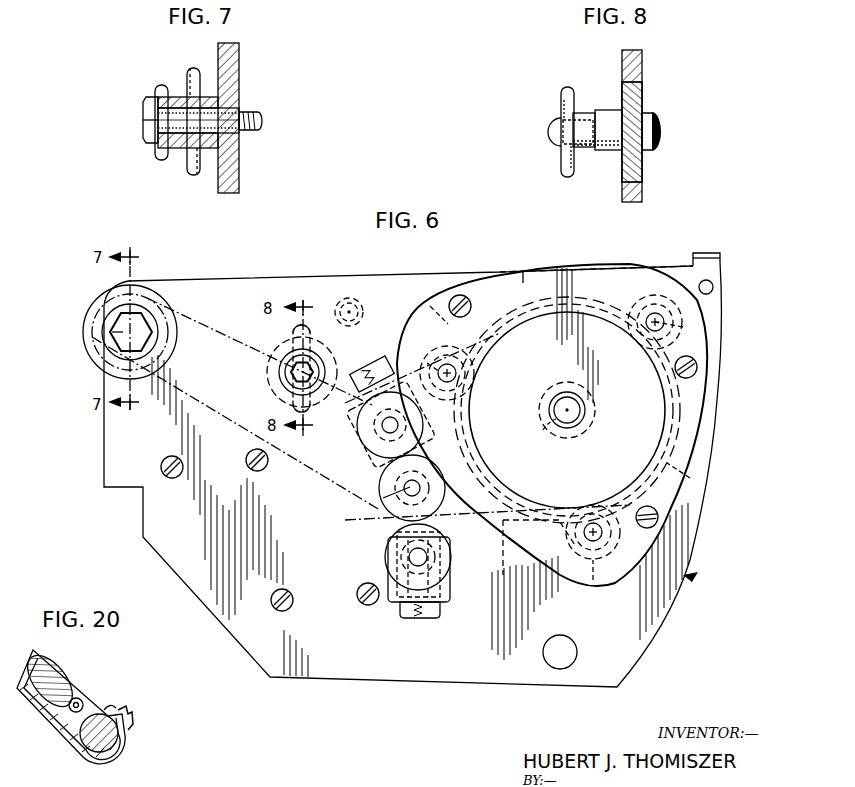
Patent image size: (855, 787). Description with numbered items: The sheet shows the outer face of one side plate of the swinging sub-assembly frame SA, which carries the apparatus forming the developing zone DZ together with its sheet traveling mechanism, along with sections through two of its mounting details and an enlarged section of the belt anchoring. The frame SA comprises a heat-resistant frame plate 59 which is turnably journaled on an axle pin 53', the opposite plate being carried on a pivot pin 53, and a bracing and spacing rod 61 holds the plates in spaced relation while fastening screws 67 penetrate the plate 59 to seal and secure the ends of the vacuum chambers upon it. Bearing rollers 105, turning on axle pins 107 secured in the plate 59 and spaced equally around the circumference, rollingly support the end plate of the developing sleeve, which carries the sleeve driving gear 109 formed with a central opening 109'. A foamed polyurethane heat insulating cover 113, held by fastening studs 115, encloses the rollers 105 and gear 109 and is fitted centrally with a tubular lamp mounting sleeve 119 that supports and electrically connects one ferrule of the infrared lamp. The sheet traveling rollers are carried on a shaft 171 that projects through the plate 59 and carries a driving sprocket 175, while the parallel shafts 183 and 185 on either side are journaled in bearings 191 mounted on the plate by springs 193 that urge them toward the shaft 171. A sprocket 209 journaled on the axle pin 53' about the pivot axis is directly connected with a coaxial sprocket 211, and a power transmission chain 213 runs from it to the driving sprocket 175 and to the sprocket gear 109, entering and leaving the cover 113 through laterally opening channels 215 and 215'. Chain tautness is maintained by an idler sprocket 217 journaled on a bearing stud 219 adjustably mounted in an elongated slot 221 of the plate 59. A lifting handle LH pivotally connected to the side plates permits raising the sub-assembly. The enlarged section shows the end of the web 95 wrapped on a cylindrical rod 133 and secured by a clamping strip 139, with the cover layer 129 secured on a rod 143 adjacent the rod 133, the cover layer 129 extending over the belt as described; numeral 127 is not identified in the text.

In FIG. 7, the pivot pin 53 is at (207, 113).
In FIG. 6, the axle pin 53' is at (83, 328).
In FIG. 7, the frame plate 59 is at (227, 155).
In FIG. 8, the frame plate 59 is at (635, 191).
In FIG. 6, the frame plate 59 is at (328, 287).
In FIG. 6, the bracing and spacing rod 61 is at (360, 306).
In FIG. 6, the fastening screws 67 is at (178, 478).
In FIG. 20, the web 95 is at (60, 724).
In FIG. 6, the bearing rollers 105 is at (427, 363).
In FIG. 6, the axle pins 107 is at (461, 375).
In FIG. 6, the sleeve driving gear 109 is at (552, 415).
In FIG. 6, the central opening 109' is at (533, 446).
In FIG. 6, the heat insulating cover 113 is at (523, 283).
In FIG. 6, the fastening studs 115 is at (463, 294).
In FIG. 6, the lamp mounting sleeve 119 is at (583, 409).
In FIG. 20, the lug 127 is at (53, 674).
In FIG. 20, the cover layer 129 is at (78, 697).
In FIG. 20, the cylindrical rod 133 is at (112, 748).
In FIG. 20, the clamping strip 139 is at (132, 732).
In FIG. 20, the rod 143 is at (92, 706).
In FIG. 6, the shaft 171 is at (384, 498).
In FIG. 6, the driving sprocket 175 is at (384, 483).
In FIG. 6, the shaft 183 is at (420, 557).
In FIG. 6, the shaft 185 is at (399, 428).
In FIG. 6, the bearings 191 is at (353, 403).
In FIG. 6, the springs 193 is at (382, 358).
In FIG. 7, the sprocket 209 is at (193, 168).
In FIG. 6, the sprocket 209 is at (96, 311).
In FIG. 7, the sprocket 211 is at (161, 158).
In FIG. 6, the sprocket 211 is at (113, 350).
In FIG. 6, the power transmission chain 213 is at (226, 417).
In FIG. 6, the channel 215 is at (422, 308).
In FIG. 6, the channel 215' is at (532, 551).
In FIG. 8, the idler sprocket 217 is at (565, 88).
In FIG. 6, the idler sprocket 217 is at (278, 358).
In FIG. 8, the bearing stud 219 is at (607, 118).
In FIG. 8, the elongated slot 221 is at (636, 98).
In FIG. 6, the lifting handle LH is at (708, 262).
In FIG. 6, the developing zone DZ is at (690, 478).
In FIG. 6, the frame SA is at (695, 577).